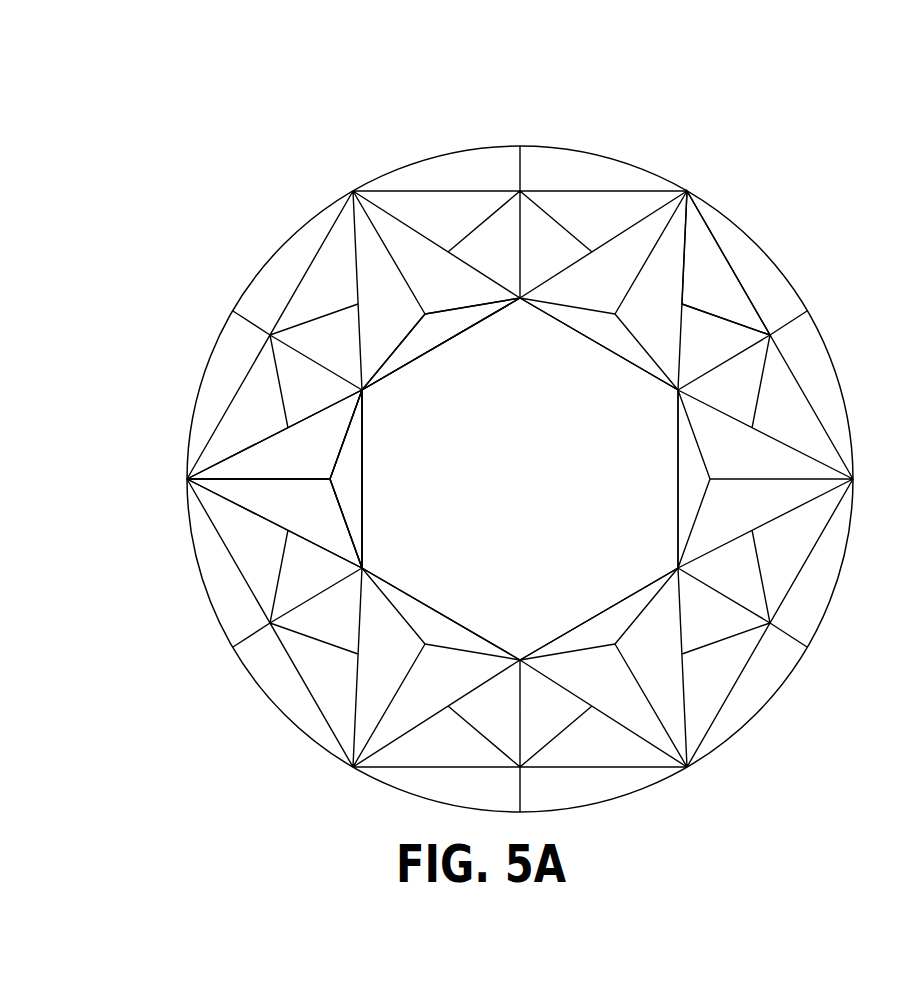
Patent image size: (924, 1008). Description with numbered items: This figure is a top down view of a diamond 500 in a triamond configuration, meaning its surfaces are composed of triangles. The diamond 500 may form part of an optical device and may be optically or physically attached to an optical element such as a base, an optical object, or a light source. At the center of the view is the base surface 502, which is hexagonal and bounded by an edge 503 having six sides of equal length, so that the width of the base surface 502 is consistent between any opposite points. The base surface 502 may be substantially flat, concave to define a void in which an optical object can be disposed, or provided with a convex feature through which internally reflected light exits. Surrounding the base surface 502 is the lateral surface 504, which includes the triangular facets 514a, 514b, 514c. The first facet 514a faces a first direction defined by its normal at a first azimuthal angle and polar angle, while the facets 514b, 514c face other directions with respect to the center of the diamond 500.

The diamond 500 is at (215, 108).
The base surface 502 is at (538, 491).
The edge 503 is at (418, 342).
The lateral surface 504 is at (722, 282).
The first facet 514a is at (293, 458).
The facet 514b is at (293, 500).
The facet 514c is at (350, 492).